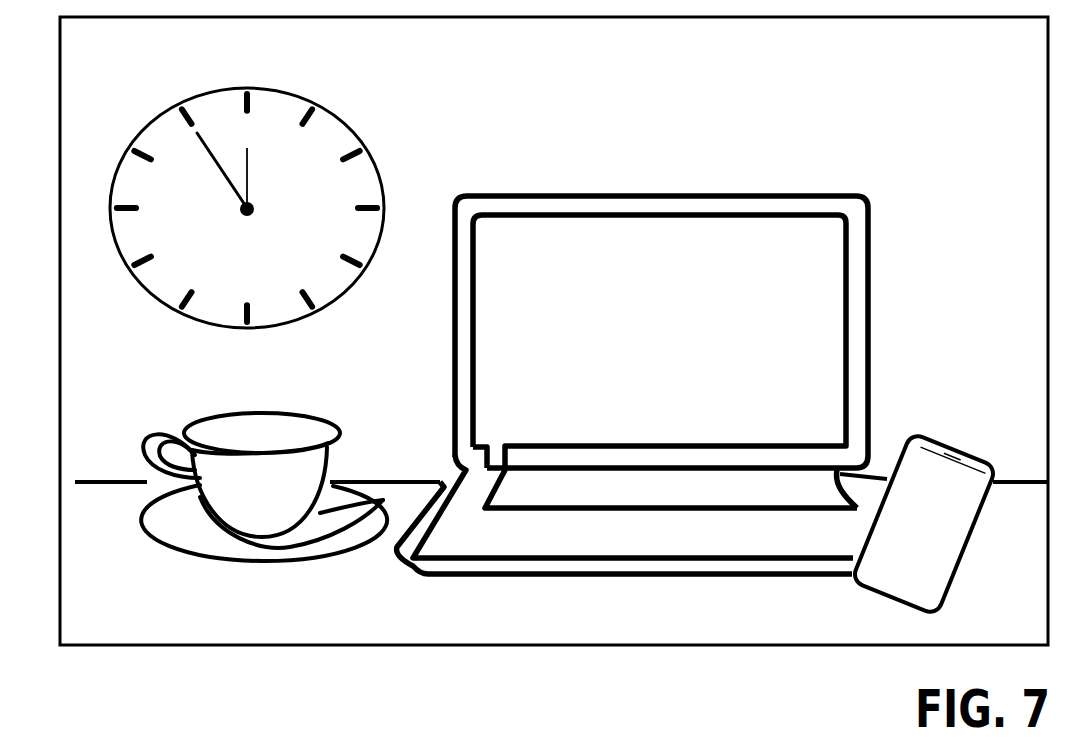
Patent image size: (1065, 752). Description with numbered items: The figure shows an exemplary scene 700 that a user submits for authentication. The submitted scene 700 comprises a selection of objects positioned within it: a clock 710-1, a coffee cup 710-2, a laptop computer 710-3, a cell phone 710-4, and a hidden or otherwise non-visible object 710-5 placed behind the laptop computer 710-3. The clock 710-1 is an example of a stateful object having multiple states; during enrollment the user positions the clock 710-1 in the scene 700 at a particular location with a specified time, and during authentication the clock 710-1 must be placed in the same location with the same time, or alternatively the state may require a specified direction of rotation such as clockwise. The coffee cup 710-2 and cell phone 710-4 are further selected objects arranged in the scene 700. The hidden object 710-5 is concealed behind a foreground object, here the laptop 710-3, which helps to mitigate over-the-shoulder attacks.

The scene 700 is at (1014, 57).
The clock 710-1 is at (340, 118).
The coffee cup 710-2 is at (307, 428).
The laptop computer 710-3 is at (800, 200).
The cell phone 710-4 is at (935, 433).
The hidden object 710-5 is at (893, 311).